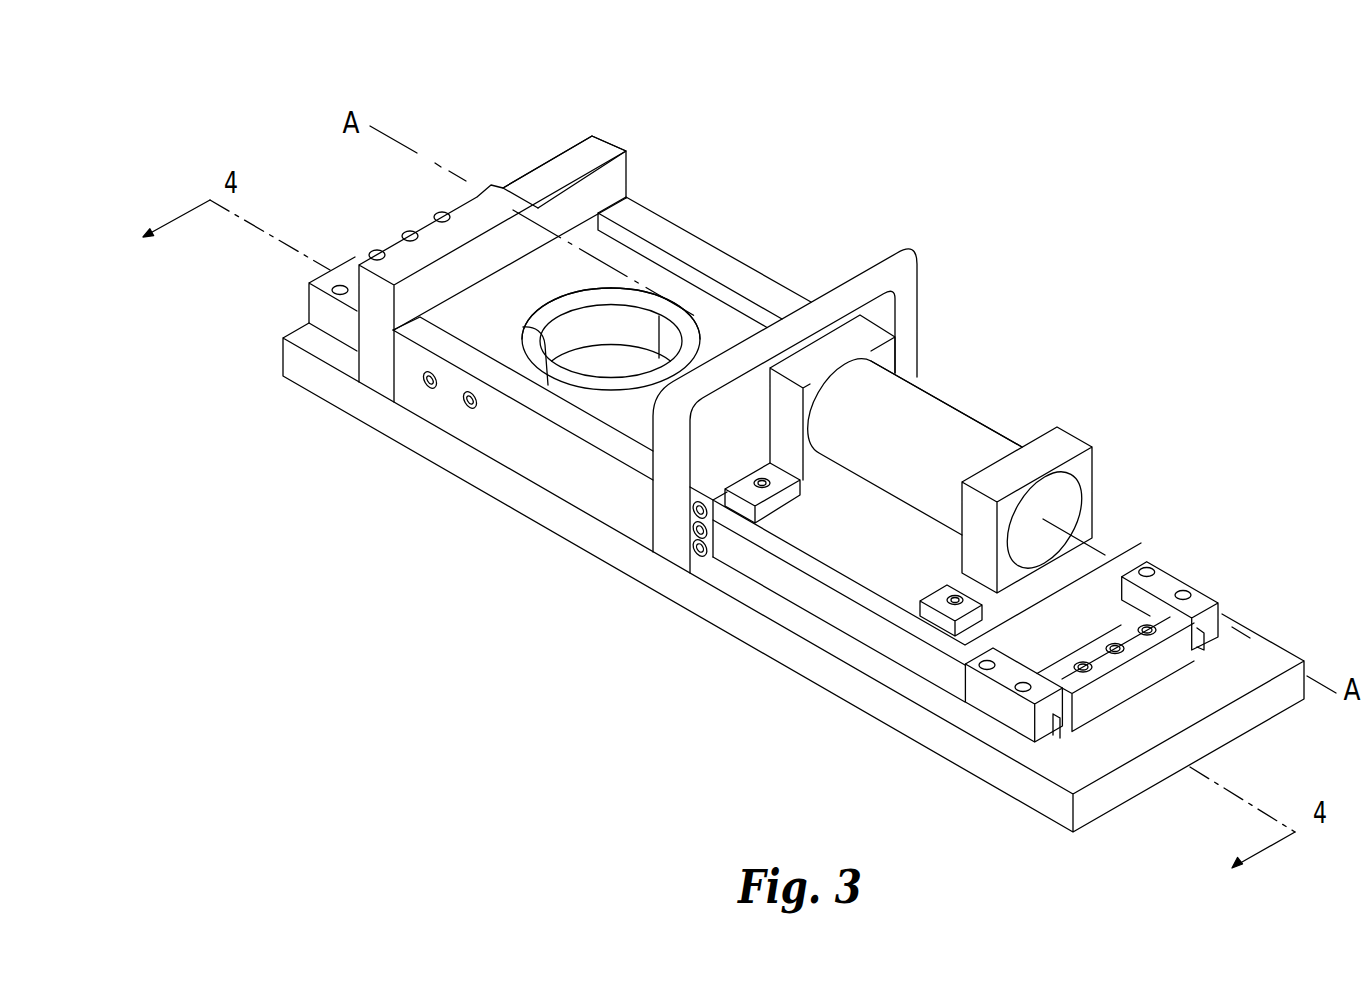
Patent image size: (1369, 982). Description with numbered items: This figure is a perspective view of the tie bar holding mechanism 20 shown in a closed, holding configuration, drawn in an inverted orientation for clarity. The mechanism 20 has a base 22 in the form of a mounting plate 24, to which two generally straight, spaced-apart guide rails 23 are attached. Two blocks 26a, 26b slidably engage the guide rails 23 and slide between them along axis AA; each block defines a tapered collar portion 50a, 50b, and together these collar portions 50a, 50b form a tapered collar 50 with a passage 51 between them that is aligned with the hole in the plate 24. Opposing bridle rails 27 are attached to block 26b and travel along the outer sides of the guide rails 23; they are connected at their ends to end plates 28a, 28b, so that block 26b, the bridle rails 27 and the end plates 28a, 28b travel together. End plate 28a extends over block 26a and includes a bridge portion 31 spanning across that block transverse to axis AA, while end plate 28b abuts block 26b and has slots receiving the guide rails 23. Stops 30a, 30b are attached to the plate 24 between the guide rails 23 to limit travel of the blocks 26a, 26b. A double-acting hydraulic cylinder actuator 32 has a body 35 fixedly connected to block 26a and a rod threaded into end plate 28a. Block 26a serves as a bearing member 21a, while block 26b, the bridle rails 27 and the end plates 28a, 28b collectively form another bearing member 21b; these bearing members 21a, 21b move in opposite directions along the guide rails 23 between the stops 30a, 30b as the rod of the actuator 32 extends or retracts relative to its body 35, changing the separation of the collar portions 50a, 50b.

The mechanism 20 is at (935, 388).
The bearing member 21a is at (855, 556).
The bearing member 21b is at (377, 318).
The base 22 is at (742, 624).
The guide rails 23 is at (1165, 583).
The mounting plate 24 is at (1127, 793).
The block 26a is at (628, 410).
The block 26b is at (624, 262).
The bridle rails 27 is at (688, 230).
The end plate 28a is at (674, 530).
The end plate 28b is at (617, 134).
The stop 30a is at (1172, 652).
The stop 30b is at (353, 256).
The bridge portion 31 is at (858, 300).
The double-acting hydraulic cylinder actuator 32 is at (950, 462).
The body 35 is at (1022, 445).
The tapered collar 50 is at (522, 336).
The tapered collar portion 50a is at (690, 333).
The tapered collar portion 50b is at (596, 294).
The passage 51 is at (613, 318).